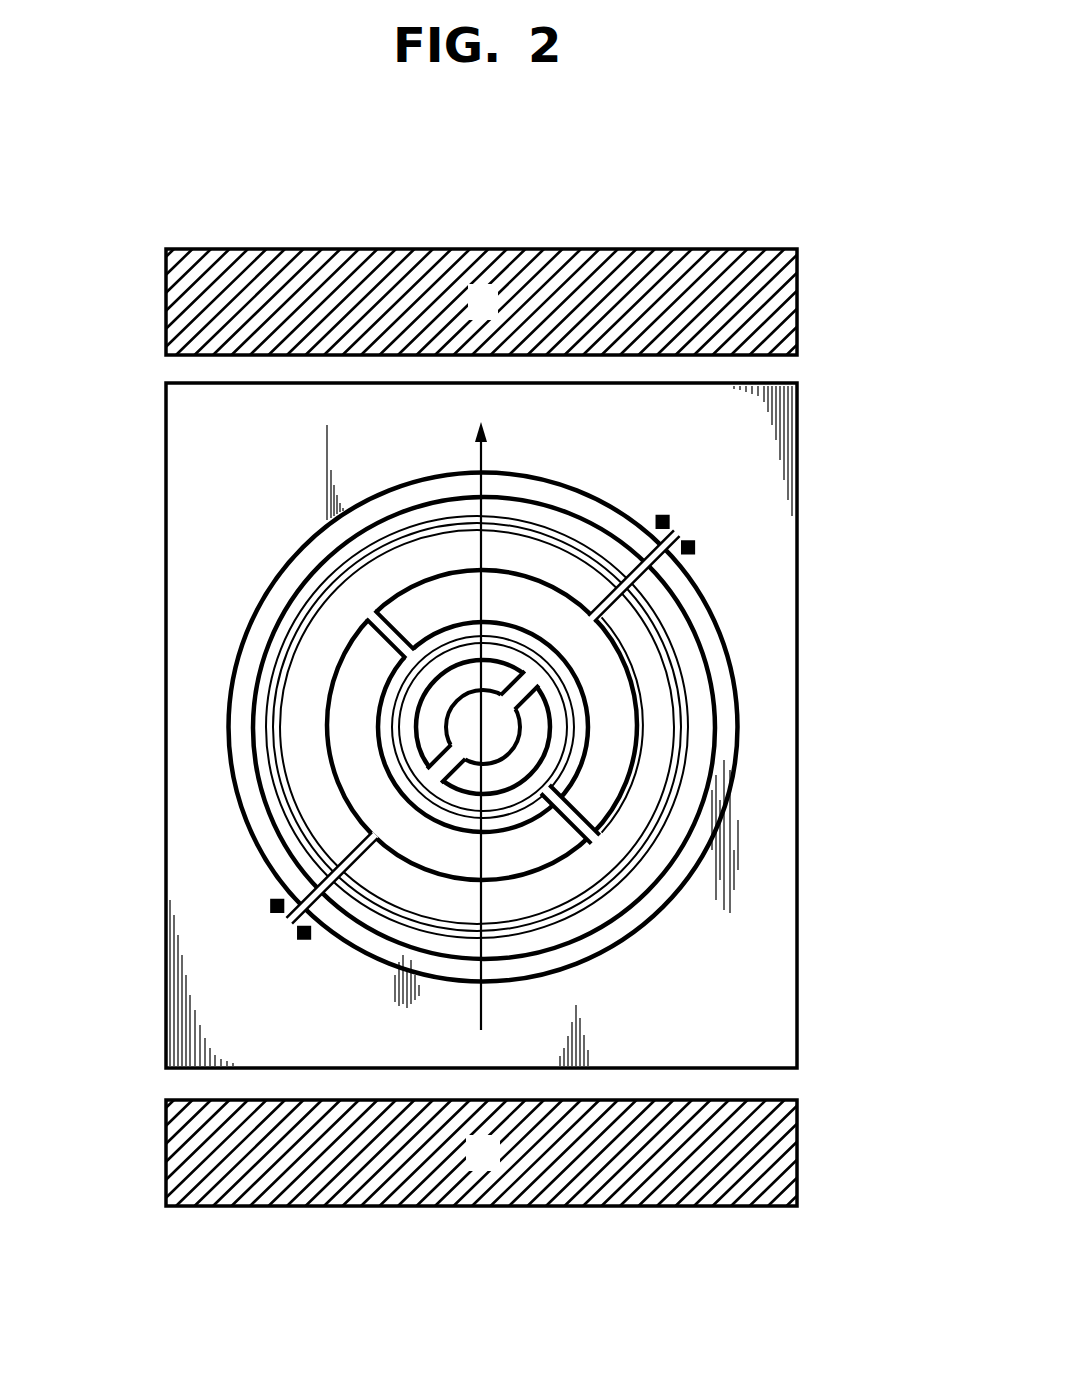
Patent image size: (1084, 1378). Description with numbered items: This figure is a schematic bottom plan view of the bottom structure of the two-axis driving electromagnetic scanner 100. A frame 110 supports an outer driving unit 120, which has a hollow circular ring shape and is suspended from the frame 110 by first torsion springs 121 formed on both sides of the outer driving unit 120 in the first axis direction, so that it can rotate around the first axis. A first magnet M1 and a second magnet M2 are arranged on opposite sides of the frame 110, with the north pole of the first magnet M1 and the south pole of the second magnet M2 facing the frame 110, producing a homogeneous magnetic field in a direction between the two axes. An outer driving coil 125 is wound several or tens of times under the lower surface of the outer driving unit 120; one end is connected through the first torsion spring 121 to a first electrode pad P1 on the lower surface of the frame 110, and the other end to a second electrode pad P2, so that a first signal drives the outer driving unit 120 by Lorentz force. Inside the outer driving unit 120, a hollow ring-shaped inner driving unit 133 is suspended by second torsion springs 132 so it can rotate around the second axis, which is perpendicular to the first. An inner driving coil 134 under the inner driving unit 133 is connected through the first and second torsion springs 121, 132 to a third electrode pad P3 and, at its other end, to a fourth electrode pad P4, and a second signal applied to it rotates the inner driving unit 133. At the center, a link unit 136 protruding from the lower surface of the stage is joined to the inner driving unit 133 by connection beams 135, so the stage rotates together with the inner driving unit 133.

The 2-axis driving electromagnetic scanner 100 is at (621, 1303).
The frame 110 is at (765, 470).
The outer driving unit 120 is at (569, 728).
The first torsion springs 121 is at (557, 727).
The outer driving coil 125 is at (575, 727).
The second torsion springs 132 is at (712, 821).
The inner driving unit 133 is at (606, 763).
The inner driving coil 134 is at (330, 727).
The connection beams 135 is at (323, 727).
The link unit 136 is at (311, 714).
The first magnet M1 is at (790, 1152).
The second magnet M2 is at (780, 304).
The first electrode pad P1 is at (245, 920).
The second electrode pad P2 is at (296, 966).
The third electrode pad P3 is at (658, 491).
The fourth electrode pad P4 is at (707, 518).